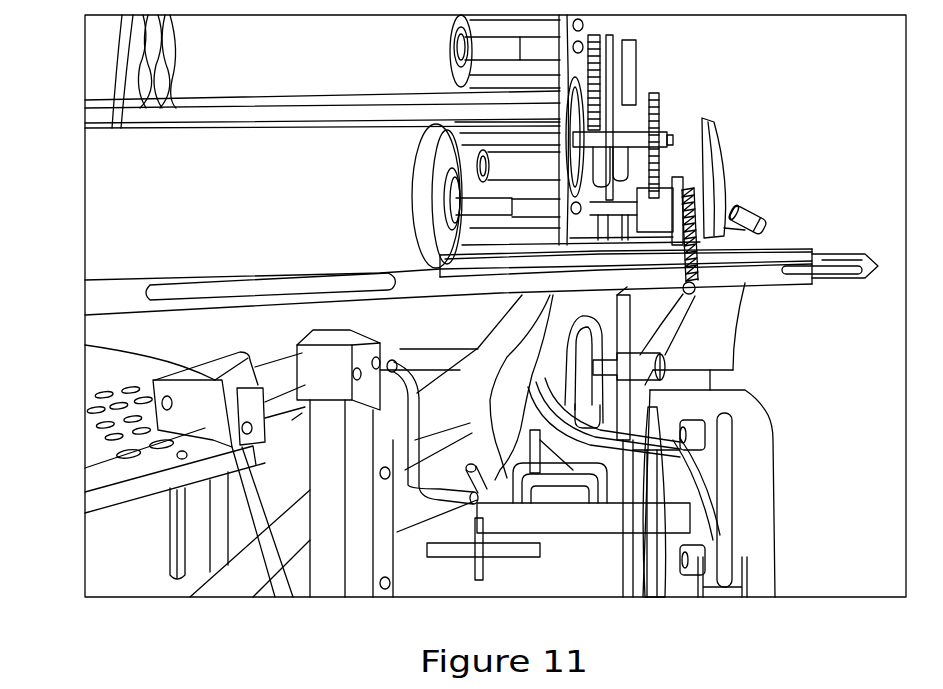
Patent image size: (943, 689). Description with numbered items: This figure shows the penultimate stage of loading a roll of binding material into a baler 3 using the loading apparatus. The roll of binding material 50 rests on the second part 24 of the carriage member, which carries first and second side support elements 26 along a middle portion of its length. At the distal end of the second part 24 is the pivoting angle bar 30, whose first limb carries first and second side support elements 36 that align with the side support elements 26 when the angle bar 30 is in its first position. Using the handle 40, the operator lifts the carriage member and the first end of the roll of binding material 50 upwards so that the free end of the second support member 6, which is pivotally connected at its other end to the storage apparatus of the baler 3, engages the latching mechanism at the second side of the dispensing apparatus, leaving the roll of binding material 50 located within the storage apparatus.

The roll of binding material 50 is at (185, 220).
The second support member 6 is at (487, 200).
The pivoting angle bar 30 is at (718, 232).
The handle 40 is at (838, 250).
The first and second side support elements 36 is at (640, 265).
The second part of the carriage member 24 is at (463, 290).
The first and second side support elements 26 is at (265, 298).
The baler 3 is at (530, 482).